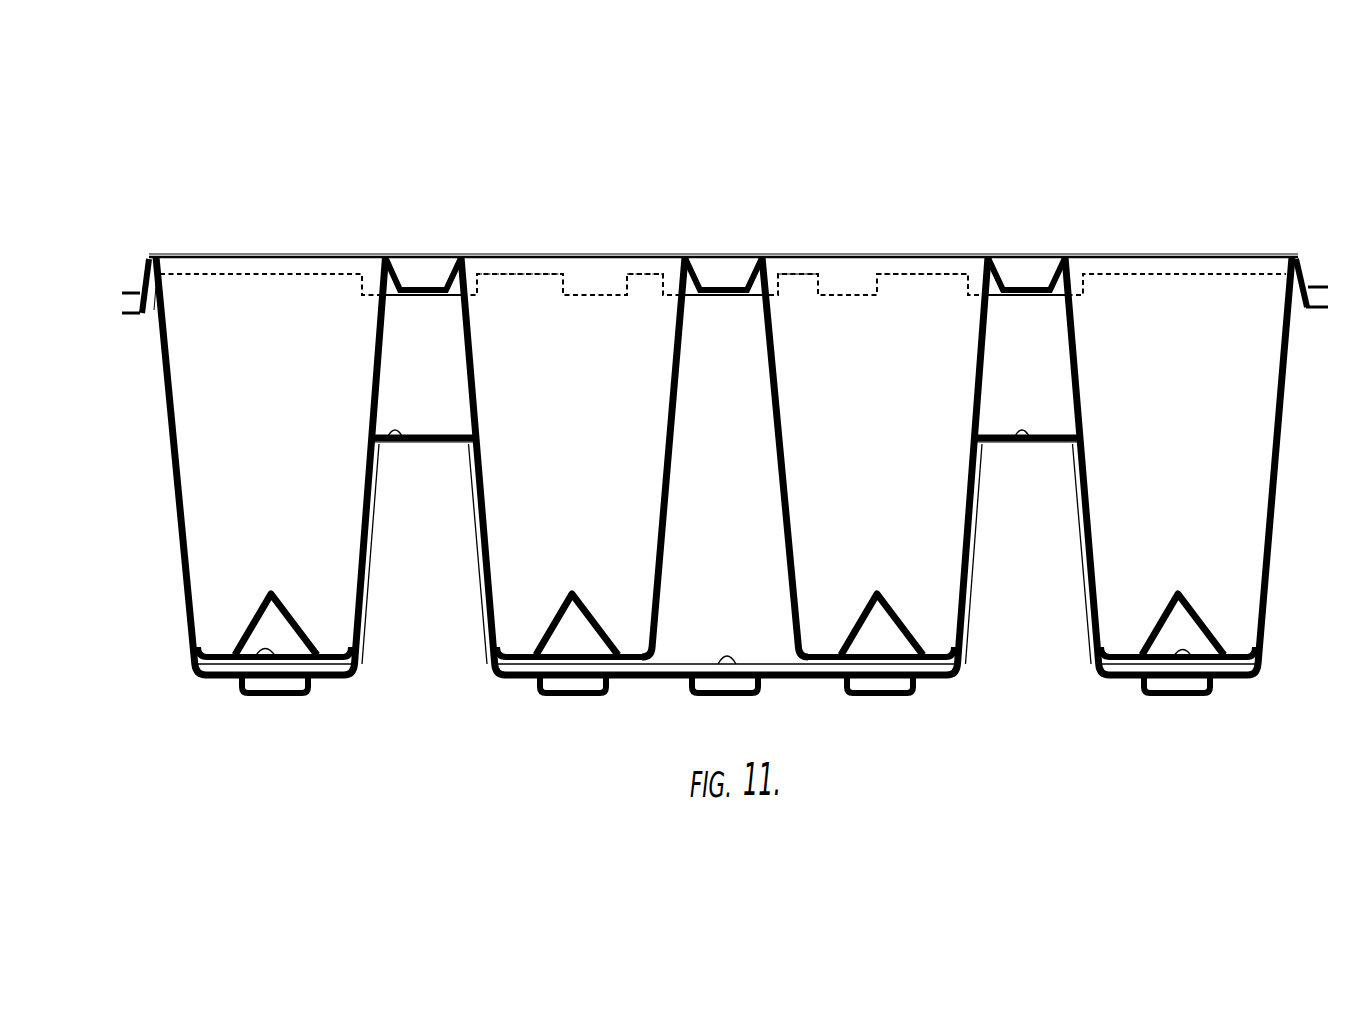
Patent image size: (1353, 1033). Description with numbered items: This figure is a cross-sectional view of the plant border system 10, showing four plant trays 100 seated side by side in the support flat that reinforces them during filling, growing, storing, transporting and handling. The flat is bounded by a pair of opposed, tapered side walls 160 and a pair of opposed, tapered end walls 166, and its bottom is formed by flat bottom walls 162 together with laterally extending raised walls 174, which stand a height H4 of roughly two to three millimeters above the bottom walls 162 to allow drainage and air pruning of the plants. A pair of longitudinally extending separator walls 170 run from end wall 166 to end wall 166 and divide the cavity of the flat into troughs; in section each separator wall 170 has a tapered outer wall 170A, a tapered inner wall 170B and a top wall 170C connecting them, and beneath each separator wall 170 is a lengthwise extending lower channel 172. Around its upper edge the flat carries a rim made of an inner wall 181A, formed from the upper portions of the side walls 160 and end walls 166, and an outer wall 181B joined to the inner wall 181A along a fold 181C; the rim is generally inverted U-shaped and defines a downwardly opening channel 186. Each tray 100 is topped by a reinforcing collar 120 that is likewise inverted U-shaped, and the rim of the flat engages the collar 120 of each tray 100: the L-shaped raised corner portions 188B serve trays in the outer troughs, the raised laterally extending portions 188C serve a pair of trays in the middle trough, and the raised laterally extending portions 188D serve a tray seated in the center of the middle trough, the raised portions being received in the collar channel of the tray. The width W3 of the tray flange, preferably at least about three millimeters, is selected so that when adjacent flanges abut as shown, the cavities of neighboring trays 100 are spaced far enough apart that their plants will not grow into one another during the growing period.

The plant border system 10 is at (1232, 186).
The plant tray 100 is at (284, 371).
The reinforcing collar 120 is at (152, 251).
The side wall 160 is at (175, 502).
The bottom wall 162 is at (1123, 675).
The end wall 166 is at (1033, 353).
The separator wall 170 is at (425, 436).
The tapered outer wall 170A is at (360, 637).
The tapered inner wall 170B is at (488, 627).
The top wall 170C is at (397, 438).
The lower channel 172 is at (400, 587).
The raised wall 174 is at (267, 653).
The inner wall 181A is at (163, 307).
The outer wall 181B is at (138, 303).
The fold 181C is at (158, 300).
The downwardly opening channel 186 is at (147, 322).
The L-shaped raised corner portion 188B is at (310, 272).
The raised laterally extending portion 188C is at (520, 272).
The raised laterally extending portion 188D is at (648, 272).
The flange width W3 is at (973, 193).
The raised wall height H4 is at (1301, 706).